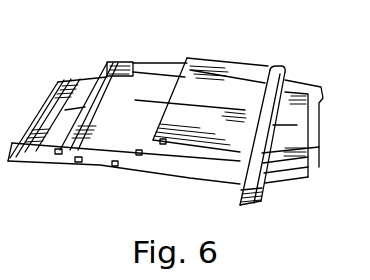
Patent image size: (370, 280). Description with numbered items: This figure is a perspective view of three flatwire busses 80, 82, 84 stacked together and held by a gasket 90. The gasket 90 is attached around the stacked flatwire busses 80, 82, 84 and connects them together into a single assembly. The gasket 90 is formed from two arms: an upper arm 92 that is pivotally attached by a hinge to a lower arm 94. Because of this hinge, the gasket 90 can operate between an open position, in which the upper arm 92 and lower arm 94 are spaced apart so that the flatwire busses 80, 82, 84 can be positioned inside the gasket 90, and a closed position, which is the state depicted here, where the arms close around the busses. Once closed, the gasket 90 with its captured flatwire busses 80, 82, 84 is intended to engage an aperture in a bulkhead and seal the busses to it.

The flatwire bus 80 is at (66, 78).
The flatwire bus 82 is at (117, 61).
The flatwire bus 84 is at (197, 62).
The gasket 90 is at (277, 70).
The upper arm 92 is at (240, 192).
The lower arm 94 is at (263, 208).